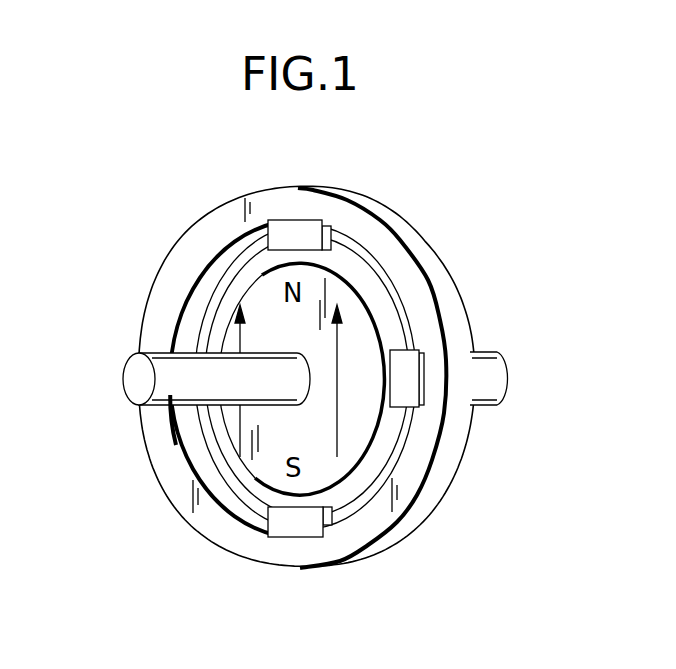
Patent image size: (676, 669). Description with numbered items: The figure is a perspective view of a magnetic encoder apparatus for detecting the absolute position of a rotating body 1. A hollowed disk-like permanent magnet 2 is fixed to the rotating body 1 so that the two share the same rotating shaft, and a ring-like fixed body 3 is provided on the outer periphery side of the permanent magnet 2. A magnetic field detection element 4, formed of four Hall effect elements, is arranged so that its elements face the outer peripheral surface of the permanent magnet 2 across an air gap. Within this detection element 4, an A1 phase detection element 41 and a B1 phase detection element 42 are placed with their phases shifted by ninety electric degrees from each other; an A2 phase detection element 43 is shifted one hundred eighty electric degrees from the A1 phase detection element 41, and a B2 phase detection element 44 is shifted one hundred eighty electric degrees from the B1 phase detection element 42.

The rotating body 1 is at (133, 377).
The hollowed disk-like permanent magnet 2 is at (243, 287).
The ring-like fixed body 3 is at (441, 279).
The magnetic field detection element 4 is at (299, 195).
The A1 phase detection element 41 is at (288, 230).
The B1 phase detection element 42 is at (410, 393).
The A2 phase detection element 43 is at (297, 530).
The B2 phase detection element 44 is at (186, 413).